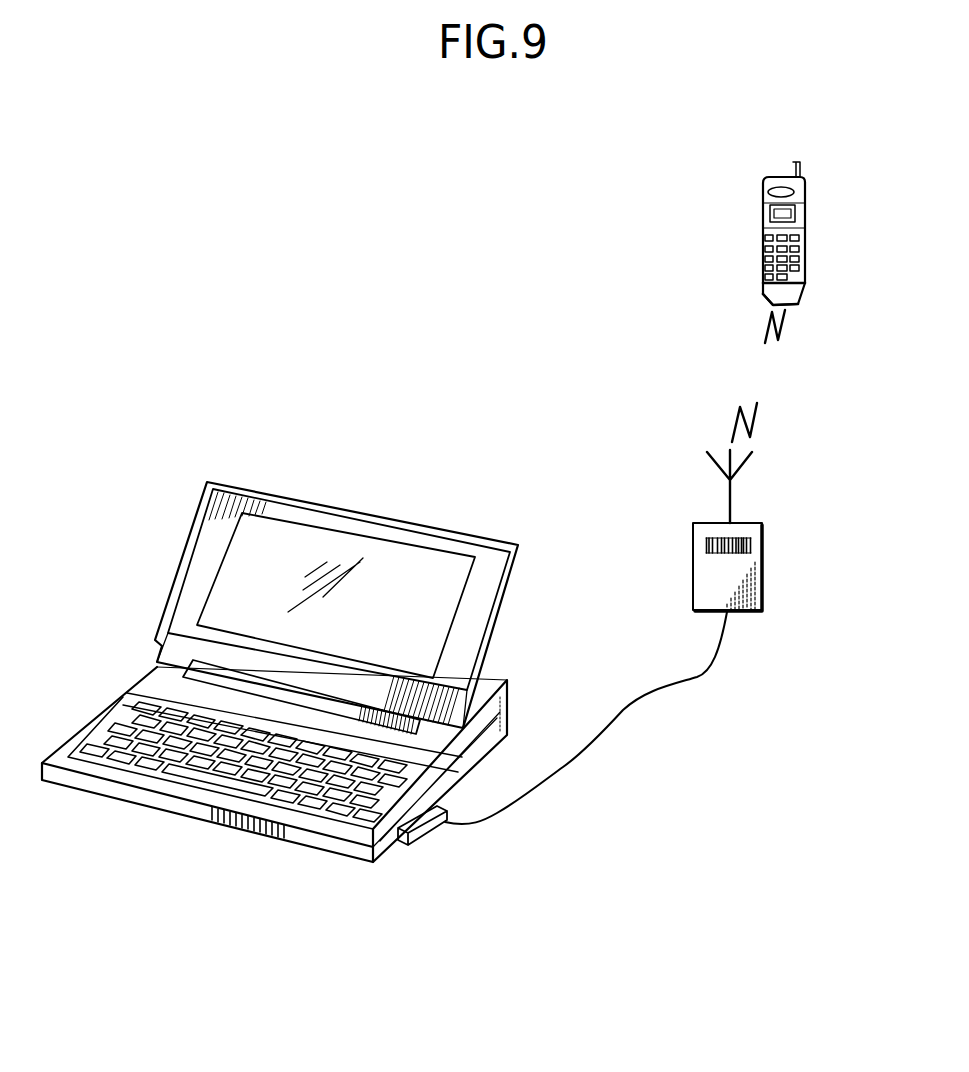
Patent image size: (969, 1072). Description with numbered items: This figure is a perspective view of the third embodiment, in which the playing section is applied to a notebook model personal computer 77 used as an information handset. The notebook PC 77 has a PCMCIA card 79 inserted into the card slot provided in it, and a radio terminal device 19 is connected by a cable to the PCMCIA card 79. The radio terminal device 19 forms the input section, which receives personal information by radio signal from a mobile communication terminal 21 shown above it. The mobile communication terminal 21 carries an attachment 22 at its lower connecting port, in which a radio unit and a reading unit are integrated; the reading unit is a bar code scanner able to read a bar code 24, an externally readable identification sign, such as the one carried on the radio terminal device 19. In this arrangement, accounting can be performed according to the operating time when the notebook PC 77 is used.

The notebook model personal computer 77 is at (370, 497).
The PCMCIA card 79 is at (427, 838).
The radio terminal device 19 is at (763, 587).
The bar code 24 is at (742, 536).
The mobile communication terminal 21 is at (806, 206).
The attachment 22 is at (798, 298).